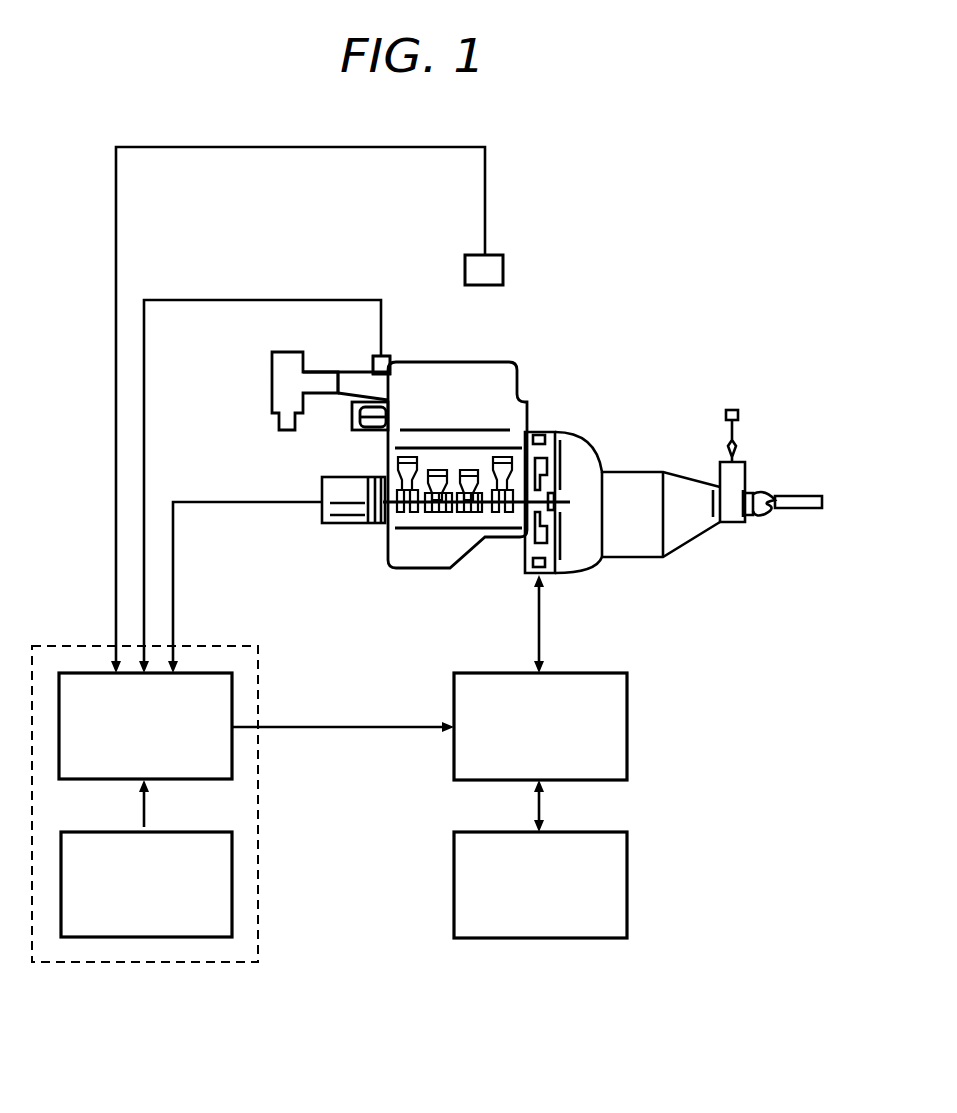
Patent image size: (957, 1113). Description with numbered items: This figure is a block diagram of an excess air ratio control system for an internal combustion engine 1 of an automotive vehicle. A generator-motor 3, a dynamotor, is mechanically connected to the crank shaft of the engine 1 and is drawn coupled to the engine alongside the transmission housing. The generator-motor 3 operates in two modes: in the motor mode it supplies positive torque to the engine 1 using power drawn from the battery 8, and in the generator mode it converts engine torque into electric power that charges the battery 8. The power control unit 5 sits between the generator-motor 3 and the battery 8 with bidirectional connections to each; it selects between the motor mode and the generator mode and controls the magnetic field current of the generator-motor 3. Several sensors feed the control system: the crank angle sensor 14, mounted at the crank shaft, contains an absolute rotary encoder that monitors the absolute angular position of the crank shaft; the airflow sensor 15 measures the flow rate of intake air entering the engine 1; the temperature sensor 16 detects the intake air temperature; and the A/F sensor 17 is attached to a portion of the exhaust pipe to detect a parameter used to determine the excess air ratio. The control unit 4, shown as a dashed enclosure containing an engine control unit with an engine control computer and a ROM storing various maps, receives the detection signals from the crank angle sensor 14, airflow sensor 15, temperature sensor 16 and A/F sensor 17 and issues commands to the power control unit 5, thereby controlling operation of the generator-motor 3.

The internal combustion engine 1 is at (455, 415).
The generator-motor 3 is at (542, 432).
The control unit 4 is at (258, 886).
The power control unit 5 is at (627, 695).
The battery 8 is at (627, 853).
The crank angle sensor 14 is at (345, 524).
The airflow sensor 15 is at (368, 356).
The temperature sensor 16 is at (381, 365).
The A/F sensor 17 is at (503, 266).